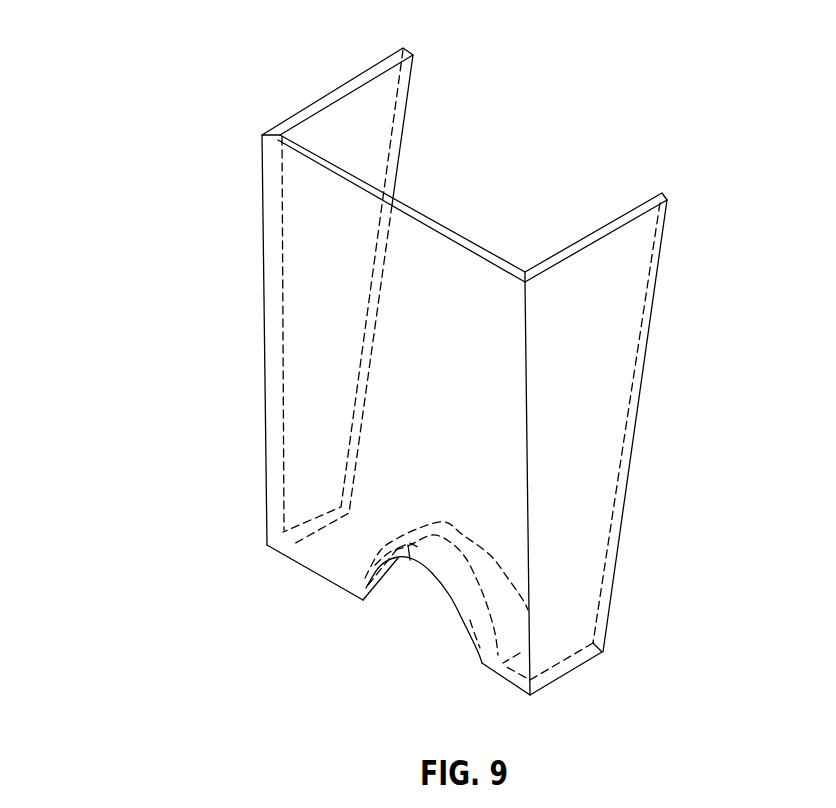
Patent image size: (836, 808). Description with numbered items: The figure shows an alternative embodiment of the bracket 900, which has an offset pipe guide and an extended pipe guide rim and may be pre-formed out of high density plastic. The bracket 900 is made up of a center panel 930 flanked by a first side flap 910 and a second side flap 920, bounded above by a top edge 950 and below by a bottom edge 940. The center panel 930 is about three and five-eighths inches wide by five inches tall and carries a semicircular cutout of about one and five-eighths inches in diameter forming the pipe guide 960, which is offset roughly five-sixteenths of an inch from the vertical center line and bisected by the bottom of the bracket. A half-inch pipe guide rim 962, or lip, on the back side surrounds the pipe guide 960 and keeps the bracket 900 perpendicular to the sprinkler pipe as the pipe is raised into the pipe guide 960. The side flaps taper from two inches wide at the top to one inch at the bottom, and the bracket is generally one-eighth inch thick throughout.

The bracket 900 is at (128, 44).
The first side flap 910 is at (330, 123).
The second side flap 920 is at (620, 317).
The center panel 930 is at (420, 263).
The bottom edge 940 is at (285, 552).
The top edge 950 is at (423, 222).
The pipe guide 960 is at (429, 607).
The pipe guide rim 962 is at (505, 623).